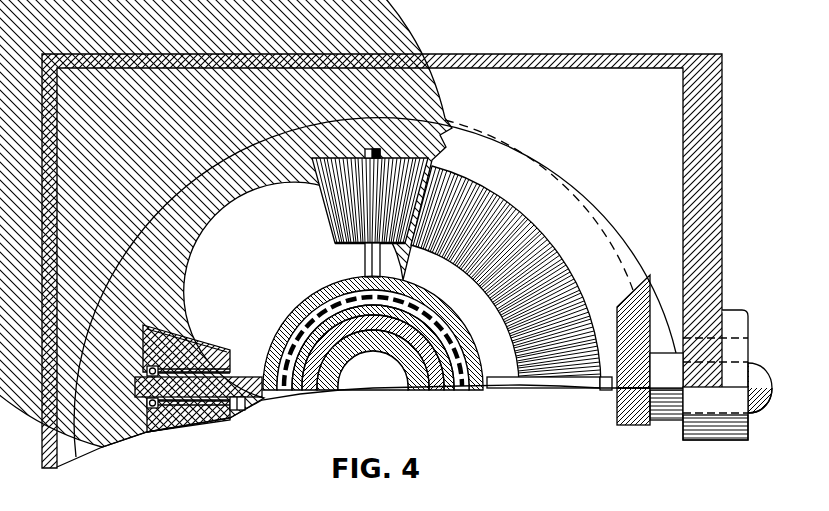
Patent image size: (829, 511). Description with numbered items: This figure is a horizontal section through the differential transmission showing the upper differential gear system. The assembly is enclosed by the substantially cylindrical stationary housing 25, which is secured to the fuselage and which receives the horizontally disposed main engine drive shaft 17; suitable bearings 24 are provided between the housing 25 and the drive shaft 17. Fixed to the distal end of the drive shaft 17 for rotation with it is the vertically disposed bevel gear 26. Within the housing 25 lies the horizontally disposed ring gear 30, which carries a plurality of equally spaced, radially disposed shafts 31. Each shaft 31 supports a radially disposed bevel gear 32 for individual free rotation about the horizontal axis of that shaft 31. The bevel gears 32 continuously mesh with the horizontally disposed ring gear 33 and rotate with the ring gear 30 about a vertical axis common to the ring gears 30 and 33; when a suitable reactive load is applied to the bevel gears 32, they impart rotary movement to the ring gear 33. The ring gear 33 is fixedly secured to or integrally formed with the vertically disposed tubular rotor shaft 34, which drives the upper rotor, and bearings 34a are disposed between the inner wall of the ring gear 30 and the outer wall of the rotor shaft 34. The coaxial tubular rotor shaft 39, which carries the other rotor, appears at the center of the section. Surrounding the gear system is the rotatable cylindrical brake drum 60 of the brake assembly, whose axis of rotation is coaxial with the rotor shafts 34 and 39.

The main engine drive shaft 17 is at (753, 365).
The bearings 24 is at (741, 440).
The stationary housing 25 is at (560, 54).
The bevel gear 26 is at (631, 425).
The ring gear 30 is at (252, 252).
The shafts 31 is at (365, 258).
The bevel gears 32 is at (422, 172).
The ring gear 33 is at (568, 262).
The rotor shaft 34 is at (306, 396).
The bearings 34a is at (460, 394).
The rotor shaft 39 is at (408, 392).
The brake drum 60 is at (164, 167).